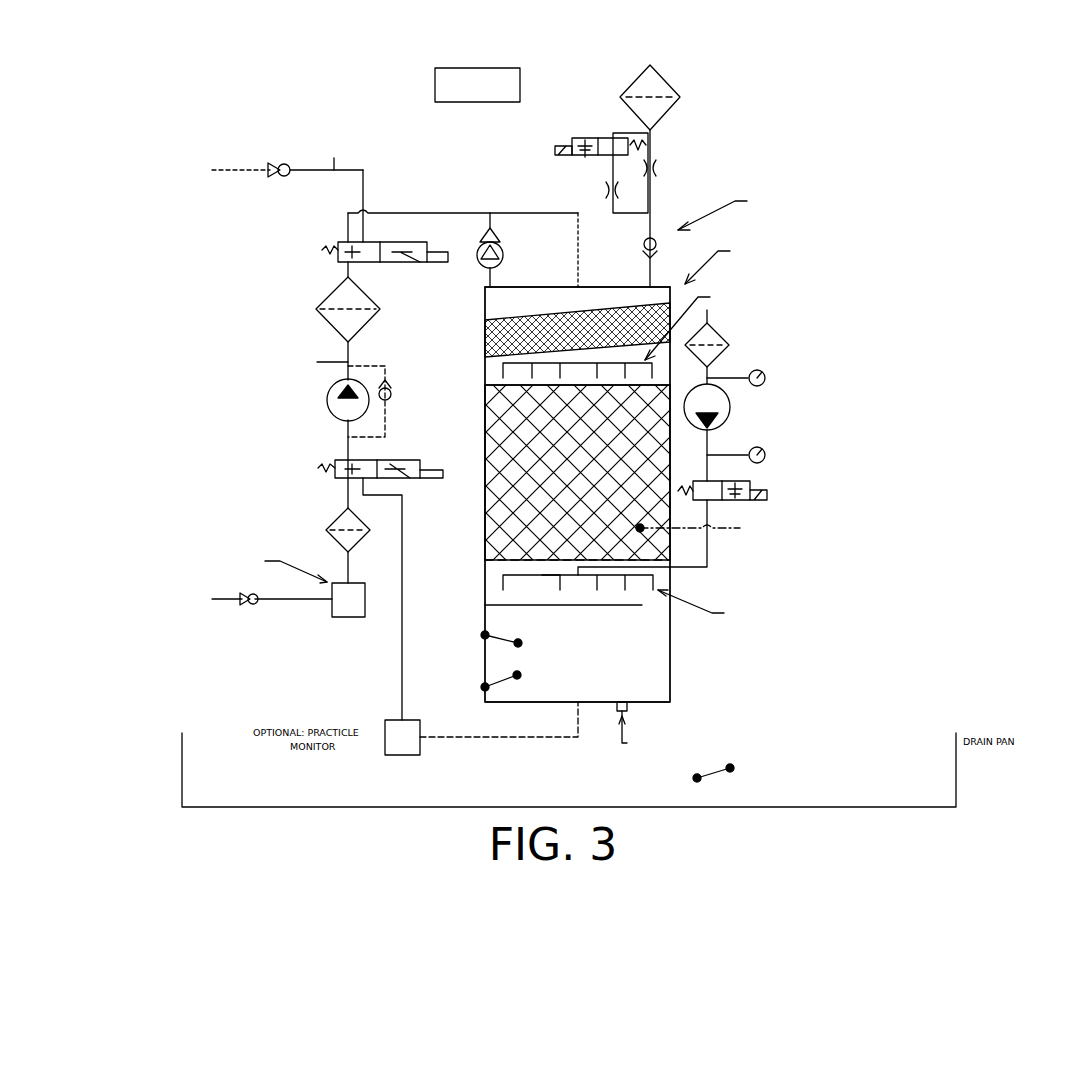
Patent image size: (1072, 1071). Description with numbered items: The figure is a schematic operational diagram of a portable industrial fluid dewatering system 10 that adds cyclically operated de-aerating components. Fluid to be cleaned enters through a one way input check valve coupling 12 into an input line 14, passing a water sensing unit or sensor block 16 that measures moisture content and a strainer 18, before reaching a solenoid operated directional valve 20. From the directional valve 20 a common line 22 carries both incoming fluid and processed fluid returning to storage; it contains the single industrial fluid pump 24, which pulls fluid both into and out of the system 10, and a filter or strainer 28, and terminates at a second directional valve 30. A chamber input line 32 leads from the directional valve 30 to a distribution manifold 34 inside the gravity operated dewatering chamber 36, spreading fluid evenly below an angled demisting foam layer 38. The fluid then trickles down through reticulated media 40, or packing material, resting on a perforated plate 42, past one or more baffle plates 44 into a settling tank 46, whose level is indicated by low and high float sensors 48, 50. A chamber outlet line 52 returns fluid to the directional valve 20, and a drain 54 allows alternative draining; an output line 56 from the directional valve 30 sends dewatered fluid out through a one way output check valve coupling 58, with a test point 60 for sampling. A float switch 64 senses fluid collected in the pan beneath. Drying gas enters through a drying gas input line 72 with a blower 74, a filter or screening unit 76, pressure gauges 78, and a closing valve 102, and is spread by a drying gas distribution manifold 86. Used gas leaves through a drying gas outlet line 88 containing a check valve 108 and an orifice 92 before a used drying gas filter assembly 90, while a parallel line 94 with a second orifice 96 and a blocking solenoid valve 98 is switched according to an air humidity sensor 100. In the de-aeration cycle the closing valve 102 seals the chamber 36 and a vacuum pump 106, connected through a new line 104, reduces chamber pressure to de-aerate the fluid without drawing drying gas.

The industrial fluid dewatering system 10 is at (867, 210).
The one way input check valve coupling 12 is at (248, 606).
The input line 14 is at (290, 603).
The water sensing unit or sensor block 16 is at (346, 620).
The strainer 18 is at (357, 548).
The directional valve 20 is at (398, 460).
The common line 22 is at (352, 352).
The industrial fluid pump 24 is at (330, 415).
The filter or strainer 28 is at (362, 297).
The directional valve 30 is at (416, 248).
The chamber input line 32 is at (510, 208).
The distribution manifold 34 is at (912, 284).
The gravity operated dewatering chamber 36 is at (485, 508).
The angled demisting foam layer 38 is at (820, 268).
The reticulated media 40 is at (795, 540).
The perforated plate 42 is at (505, 560).
The baffle plate 44 is at (510, 605).
The settling tank 46 is at (616, 654).
The low float valve or sensor 48 is at (508, 680).
The high float valve or sensor 50 is at (505, 637).
The chamber outlet line 52 is at (510, 745).
The drain 54 is at (645, 736).
The output line 56 is at (363, 170).
The one way output check valve coupling 58 is at (278, 162).
The test point 60 is at (353, 130).
The float switch 64 is at (712, 770).
The drying gas input line 72 is at (707, 555).
The blower 74 is at (822, 416).
The filter or screening unit 76 is at (790, 340).
The pressure gauge 78 is at (828, 366).
The drying gas distribution manifold 86 is at (787, 625).
The drying gas outlet line 88 is at (642, 246).
The used drying gas filter assembly 90 is at (720, 90).
The orifice 92 is at (690, 156).
The parallel line 94 is at (636, 214).
The second orifice 96 is at (597, 188).
The blocking solenoid valve 98 is at (580, 138).
The air humidity sensor 100 is at (520, 88).
The closing valve 102 is at (860, 496).
The line 104 is at (496, 270).
The vacuum pump 106 is at (520, 240).
The check valve 108 is at (790, 186).